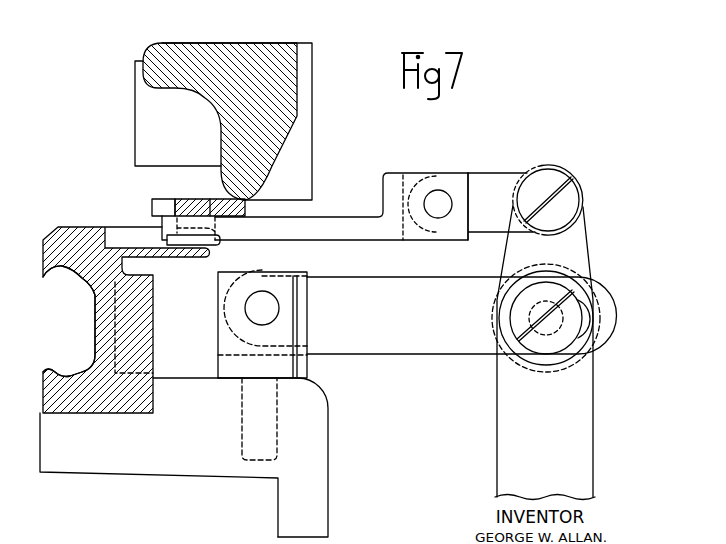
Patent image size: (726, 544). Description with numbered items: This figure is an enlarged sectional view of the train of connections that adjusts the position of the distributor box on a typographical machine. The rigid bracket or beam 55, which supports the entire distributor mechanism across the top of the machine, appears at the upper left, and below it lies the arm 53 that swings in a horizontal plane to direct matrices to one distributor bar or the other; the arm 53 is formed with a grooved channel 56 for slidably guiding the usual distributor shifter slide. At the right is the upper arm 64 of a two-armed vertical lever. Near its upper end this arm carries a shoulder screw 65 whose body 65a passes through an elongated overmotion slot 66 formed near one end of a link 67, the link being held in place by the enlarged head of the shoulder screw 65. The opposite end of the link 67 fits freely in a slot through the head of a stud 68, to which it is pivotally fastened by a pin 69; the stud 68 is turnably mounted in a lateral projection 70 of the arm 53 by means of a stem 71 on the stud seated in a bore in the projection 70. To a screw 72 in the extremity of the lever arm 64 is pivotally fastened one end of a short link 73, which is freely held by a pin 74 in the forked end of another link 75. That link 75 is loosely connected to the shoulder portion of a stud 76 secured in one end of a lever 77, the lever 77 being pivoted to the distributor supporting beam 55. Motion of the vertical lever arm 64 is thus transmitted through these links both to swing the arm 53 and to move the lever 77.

The arm 53 is at (43, 408).
The rigid bracket or beam 55 is at (145, 146).
The grooved channel 56 is at (47, 365).
The upper arm 64 is at (503, 430).
The shoulder screw 65 is at (522, 330).
The body of shoulder screw 65a is at (512, 290).
The elongated overmotion slot 66 is at (585, 356).
The link 67 is at (399, 345).
The stud 68 is at (308, 356).
The pin 69 is at (265, 300).
The lateral projection 70 is at (318, 425).
The stem 71 is at (260, 458).
The screw 72 is at (573, 203).
The short link 73 is at (486, 183).
The pin 74 is at (438, 196).
The link 75 is at (322, 225).
The stud 76 is at (167, 235).
The lever 77 is at (158, 201).